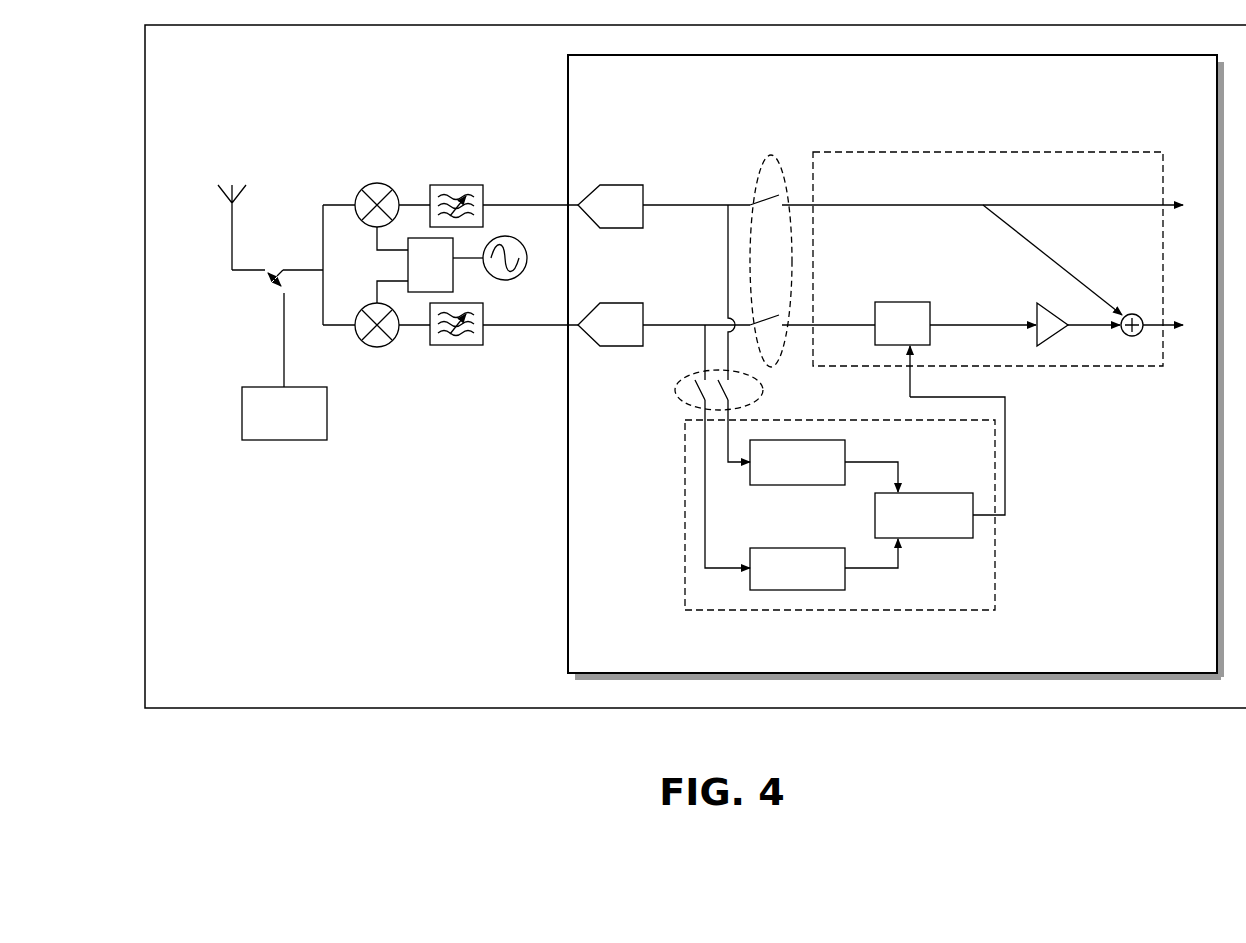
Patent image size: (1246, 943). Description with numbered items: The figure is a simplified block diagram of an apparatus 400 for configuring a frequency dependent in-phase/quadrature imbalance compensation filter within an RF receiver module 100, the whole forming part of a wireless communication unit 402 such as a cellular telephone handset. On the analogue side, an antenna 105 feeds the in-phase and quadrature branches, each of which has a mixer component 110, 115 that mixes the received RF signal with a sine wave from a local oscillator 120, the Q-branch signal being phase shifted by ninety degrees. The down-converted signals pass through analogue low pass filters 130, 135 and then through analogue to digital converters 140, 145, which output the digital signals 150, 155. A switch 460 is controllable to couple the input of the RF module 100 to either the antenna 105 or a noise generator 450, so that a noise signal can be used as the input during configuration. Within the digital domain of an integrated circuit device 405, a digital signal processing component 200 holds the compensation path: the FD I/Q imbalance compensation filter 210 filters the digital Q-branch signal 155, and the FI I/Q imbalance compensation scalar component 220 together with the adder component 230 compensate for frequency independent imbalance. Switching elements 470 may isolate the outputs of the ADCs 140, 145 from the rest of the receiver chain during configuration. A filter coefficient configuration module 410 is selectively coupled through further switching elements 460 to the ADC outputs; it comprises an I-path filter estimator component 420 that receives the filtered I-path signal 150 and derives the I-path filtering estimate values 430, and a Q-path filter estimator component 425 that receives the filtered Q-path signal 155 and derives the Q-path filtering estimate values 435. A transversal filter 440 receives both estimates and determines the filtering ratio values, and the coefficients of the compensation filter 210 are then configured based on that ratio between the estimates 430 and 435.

The RF receiver architecture 100 is at (312, 130).
The antenna 105 is at (231, 228).
The mixer component 110 is at (377, 183).
The mixer component 115 is at (377, 347).
The local oscillator 120 is at (507, 280).
The low pass filter 130 is at (464, 165).
The low pass filter 135 is at (462, 370).
The analogue to digital converter 140 is at (625, 185).
The analogue to digital converter 145 is at (628, 346).
The digital signal 150 is at (680, 184).
The digital signal 155 is at (680, 301).
The digital signal processing component 200 is at (1033, 152).
The FD I/Q imbalance compensation filter 210 is at (915, 302).
The FI I/Q imbalance compensation scalar component 220 is at (1043, 303).
The adder component 230 is at (1139, 315).
The apparatus 400 is at (376, 550).
The wireless communication unit 402 is at (188, 674).
The integrated circuit device 405 is at (894, 366).
The filter coefficient configuration module 410 is at (685, 565).
The I-path filter estimator component 420 is at (780, 485).
The Q-path filter estimator component 425 is at (790, 548).
The I-path filtering estimate value 430 is at (900, 456).
The Q-path filtering estimate value 435 is at (900, 582).
The transversal filter 440 is at (925, 493).
The noise generator 450 is at (242, 403).
The switching elements 460 is at (272, 266).
The switching elements 470 is at (770, 156).